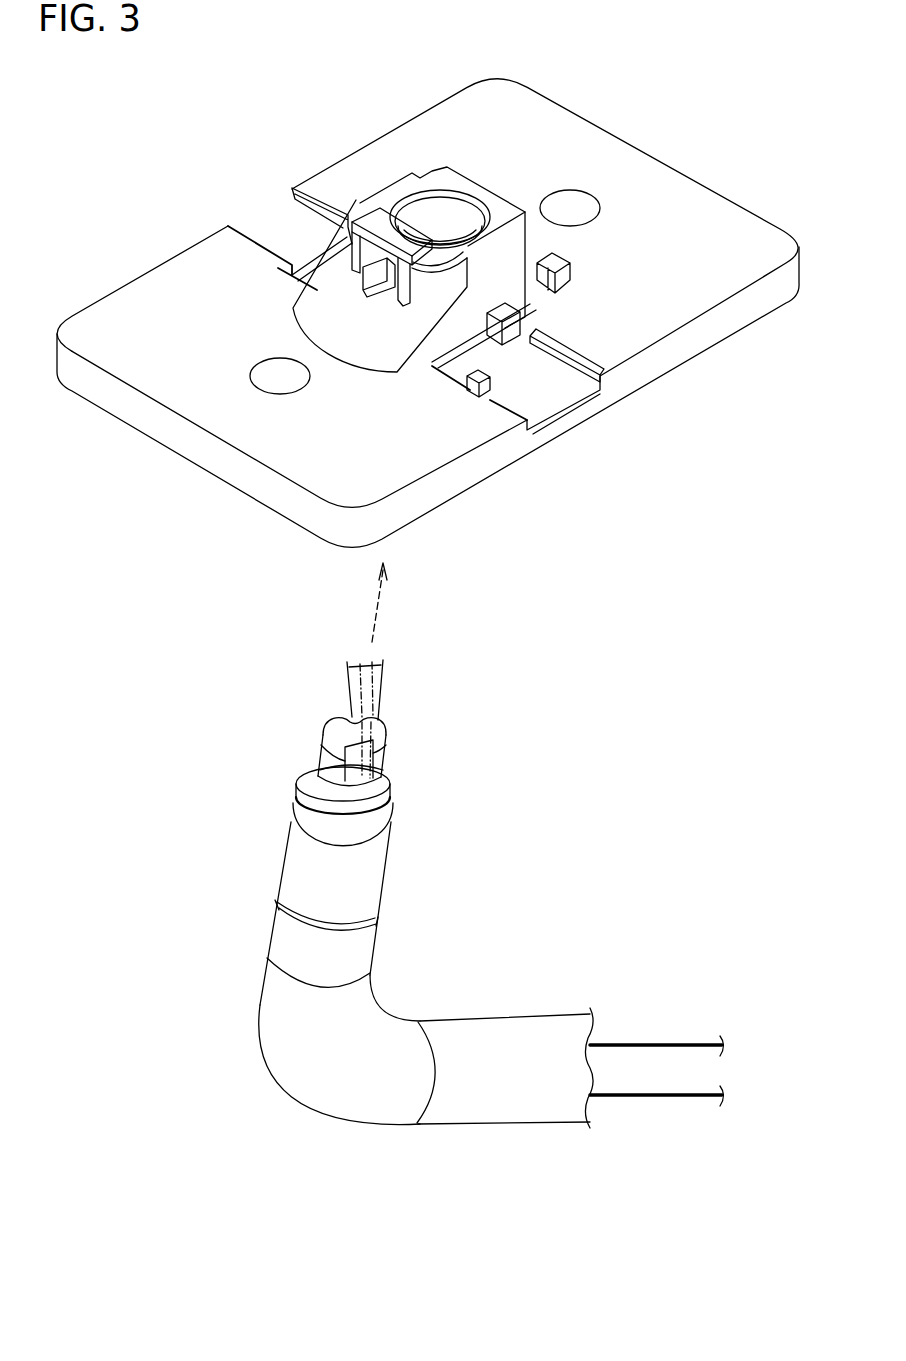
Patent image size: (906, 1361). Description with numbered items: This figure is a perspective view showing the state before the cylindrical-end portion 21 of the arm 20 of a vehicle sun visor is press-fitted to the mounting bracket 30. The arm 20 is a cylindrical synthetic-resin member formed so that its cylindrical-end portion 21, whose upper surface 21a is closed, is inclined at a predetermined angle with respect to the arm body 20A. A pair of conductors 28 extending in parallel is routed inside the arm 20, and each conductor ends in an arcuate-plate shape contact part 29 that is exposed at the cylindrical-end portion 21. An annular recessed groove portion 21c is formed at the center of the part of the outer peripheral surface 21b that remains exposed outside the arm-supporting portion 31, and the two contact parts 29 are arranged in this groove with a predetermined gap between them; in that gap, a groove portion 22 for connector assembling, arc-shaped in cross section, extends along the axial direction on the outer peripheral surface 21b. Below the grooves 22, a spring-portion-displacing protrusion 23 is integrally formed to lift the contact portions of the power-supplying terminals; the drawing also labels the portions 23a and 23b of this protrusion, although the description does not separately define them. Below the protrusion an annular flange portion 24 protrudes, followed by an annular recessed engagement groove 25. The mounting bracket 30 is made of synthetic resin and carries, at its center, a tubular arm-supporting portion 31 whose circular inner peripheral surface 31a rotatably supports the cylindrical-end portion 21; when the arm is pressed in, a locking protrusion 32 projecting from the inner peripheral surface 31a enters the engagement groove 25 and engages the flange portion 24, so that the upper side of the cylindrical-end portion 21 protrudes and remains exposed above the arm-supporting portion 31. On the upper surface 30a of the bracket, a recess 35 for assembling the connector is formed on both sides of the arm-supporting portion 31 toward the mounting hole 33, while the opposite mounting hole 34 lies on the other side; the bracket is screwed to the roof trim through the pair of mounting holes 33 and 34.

The arm 20 is at (389, 665).
The arm body 20A is at (490, 1108).
The cylindrical-end portion 21 is at (332, 827).
The upper surface 21a is at (380, 717).
The outer peripheral surface 21b is at (327, 733).
The annular recessed groove portion 21c is at (347, 787).
The groove portion for connector assembling 22 is at (350, 707).
The spring-portion-displacing protrusion 23 is at (340, 800).
The flange upper surface 23a is at (377, 781).
The flange lower surface 23b is at (300, 801).
The annular flange portion 24 is at (370, 830).
The annular recessed engagement groove 25 is at (388, 852).
The conductors 28 is at (655, 1040).
The contact part 29 is at (330, 760).
The mounting bracket 30 is at (432, 313).
The upper surface 30a is at (710, 249).
The arm-supporting portion 31 is at (399, 204).
The inner peripheral surface 31a is at (436, 207).
The locking protrusion 32 is at (452, 212).
The mounting hole 33 is at (587, 202).
The mounting hole 34 is at (273, 380).
The recess for assembling the connector 35 is at (580, 343).